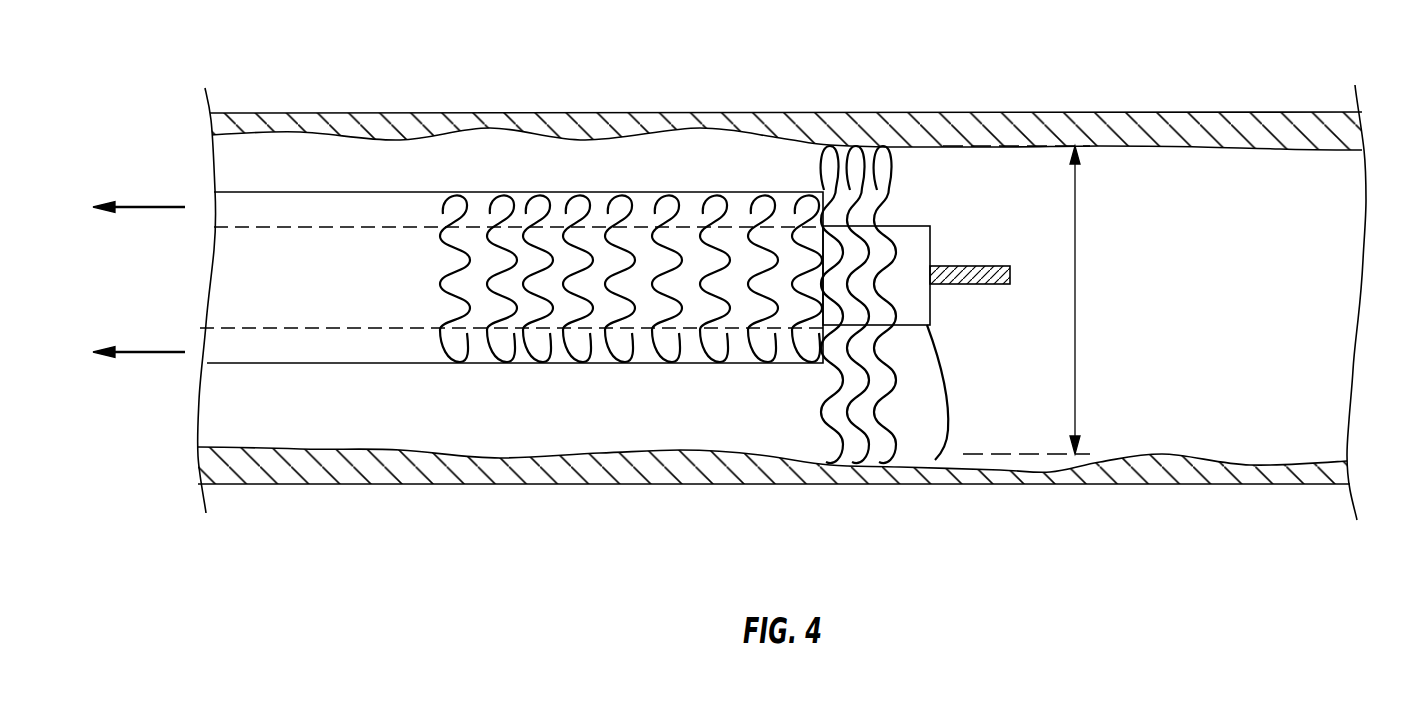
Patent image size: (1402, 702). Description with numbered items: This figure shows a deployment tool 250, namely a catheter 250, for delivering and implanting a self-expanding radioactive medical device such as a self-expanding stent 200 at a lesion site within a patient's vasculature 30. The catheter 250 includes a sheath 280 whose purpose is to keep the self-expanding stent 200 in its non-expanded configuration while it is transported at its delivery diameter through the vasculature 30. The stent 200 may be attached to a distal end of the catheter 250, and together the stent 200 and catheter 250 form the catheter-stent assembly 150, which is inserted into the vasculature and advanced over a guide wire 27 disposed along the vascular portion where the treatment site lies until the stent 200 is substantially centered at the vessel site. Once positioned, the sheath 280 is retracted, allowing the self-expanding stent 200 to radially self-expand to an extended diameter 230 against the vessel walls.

The catheter-stent assembly 150 is at (433, 80).
The vasculature 30 is at (1123, 111).
The deployment tool 250 is at (302, 227).
The sheath 280 is at (358, 363).
The self-expanding stent 200 is at (619, 362).
The guide wire 27 is at (980, 280).
The extended diameter 230 is at (1075, 310).